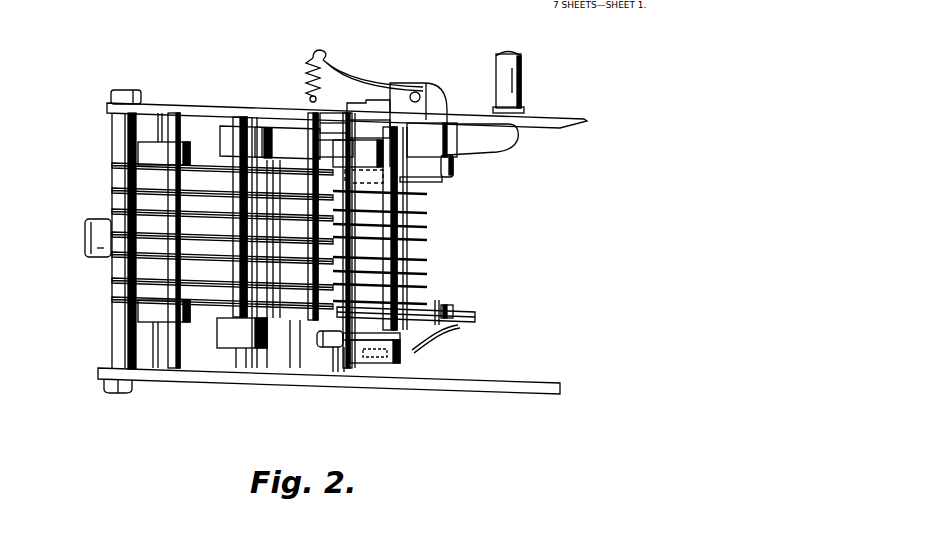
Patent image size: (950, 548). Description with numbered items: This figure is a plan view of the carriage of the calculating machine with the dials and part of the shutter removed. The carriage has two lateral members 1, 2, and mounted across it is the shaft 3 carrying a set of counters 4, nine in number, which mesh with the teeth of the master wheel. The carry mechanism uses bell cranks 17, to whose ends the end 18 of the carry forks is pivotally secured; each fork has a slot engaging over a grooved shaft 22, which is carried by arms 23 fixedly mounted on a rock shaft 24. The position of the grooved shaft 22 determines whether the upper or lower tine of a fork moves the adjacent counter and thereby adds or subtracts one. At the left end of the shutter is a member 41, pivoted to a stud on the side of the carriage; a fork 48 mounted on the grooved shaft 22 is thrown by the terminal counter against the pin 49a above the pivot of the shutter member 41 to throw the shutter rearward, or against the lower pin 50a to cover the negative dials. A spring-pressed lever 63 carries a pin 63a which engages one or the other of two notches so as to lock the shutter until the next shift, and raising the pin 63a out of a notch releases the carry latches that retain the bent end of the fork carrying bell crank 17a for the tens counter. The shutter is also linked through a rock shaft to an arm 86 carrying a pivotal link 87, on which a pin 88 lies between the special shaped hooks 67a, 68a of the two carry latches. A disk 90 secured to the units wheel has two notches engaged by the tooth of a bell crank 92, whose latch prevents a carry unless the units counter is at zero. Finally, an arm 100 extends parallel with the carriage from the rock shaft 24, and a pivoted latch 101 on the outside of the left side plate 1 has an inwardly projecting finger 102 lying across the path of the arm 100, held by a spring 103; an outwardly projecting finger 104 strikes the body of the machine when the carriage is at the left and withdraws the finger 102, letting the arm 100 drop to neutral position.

The lateral member 1 is at (325, 110).
The lateral member 2 is at (220, 377).
The shaft 3 is at (419, 94).
The counters 4 is at (427, 240).
The bell crank 17 is at (110, 166).
The fork carrying bell crank 17a is at (123, 307).
The fork end 18 is at (113, 288).
The grooved shaft 22 is at (305, 312).
The arms 23 is at (280, 155).
The rock shaft 24 is at (240, 360).
The shutter member 41 is at (460, 155).
The fork 48 is at (205, 162).
The pin 49a is at (440, 181).
The lower pin 50a is at (453, 165).
The lever 63 is at (360, 140).
The pin 63a is at (317, 140).
The hook 67a is at (478, 315).
The hook 68a is at (437, 308).
The arm 86 is at (377, 363).
The link 87 is at (412, 350).
The pin 88 is at (450, 312).
The disk 90 is at (367, 353).
The bell crank 92 is at (333, 340).
The arm 100 is at (335, 115).
The pivoted latch 101 is at (373, 88).
The inwardly projecting finger 102 is at (342, 118).
The spring 103 is at (312, 72).
The outwardly projecting finger 104 is at (517, 92).